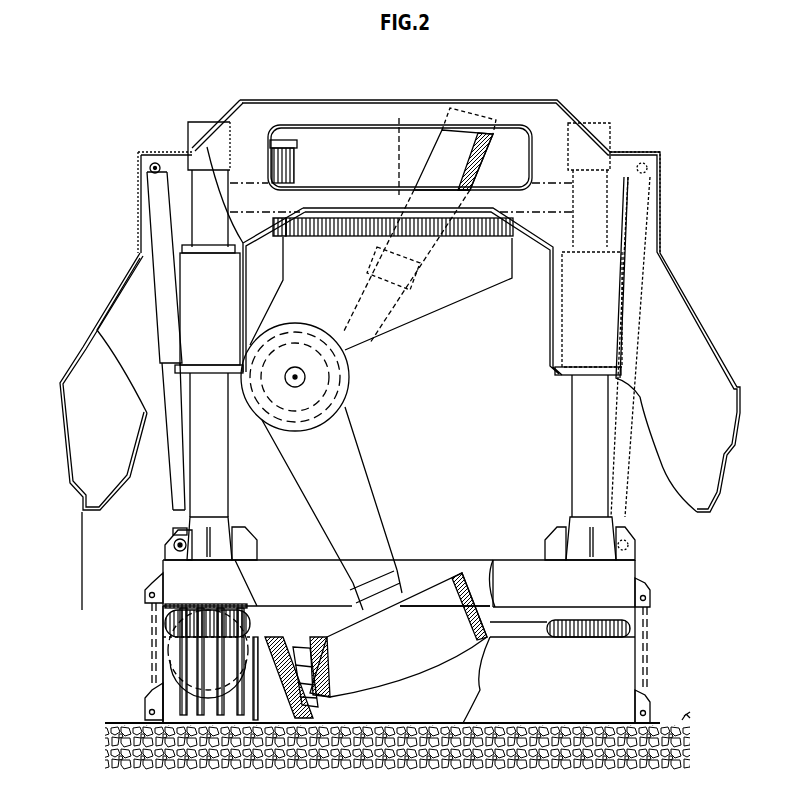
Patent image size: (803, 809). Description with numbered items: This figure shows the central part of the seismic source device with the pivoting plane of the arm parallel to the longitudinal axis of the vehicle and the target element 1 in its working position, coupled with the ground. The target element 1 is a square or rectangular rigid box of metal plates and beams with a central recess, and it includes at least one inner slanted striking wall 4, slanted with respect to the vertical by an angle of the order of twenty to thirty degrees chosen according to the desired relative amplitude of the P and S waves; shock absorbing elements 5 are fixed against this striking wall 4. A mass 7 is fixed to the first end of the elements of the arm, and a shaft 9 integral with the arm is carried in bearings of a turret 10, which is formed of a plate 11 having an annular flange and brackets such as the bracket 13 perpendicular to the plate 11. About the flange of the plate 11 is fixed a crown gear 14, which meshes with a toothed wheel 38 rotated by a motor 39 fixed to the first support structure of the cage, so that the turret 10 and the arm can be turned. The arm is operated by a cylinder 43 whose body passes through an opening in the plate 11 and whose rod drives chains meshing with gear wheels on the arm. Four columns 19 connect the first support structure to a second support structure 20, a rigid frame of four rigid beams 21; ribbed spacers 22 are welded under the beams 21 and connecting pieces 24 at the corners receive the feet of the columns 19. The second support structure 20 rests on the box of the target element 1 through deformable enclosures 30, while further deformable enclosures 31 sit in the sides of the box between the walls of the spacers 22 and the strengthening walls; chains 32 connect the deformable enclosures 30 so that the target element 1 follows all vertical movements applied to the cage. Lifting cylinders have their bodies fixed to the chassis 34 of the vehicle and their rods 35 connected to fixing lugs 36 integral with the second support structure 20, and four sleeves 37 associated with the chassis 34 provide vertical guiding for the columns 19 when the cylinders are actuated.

The target element 1 is at (607, 665).
The inner slanted striking wall 4 is at (290, 640).
The shock absorbing elements 5 is at (303, 650).
The mass 7 is at (423, 600).
The shaft 9 is at (310, 372).
The turret 10 is at (473, 363).
The plate 11 is at (493, 238).
The bracket 13 is at (420, 317).
The crown gear 14 is at (298, 237).
The columns 19 is at (215, 483).
The second support structure 20 is at (460, 552).
The rigid beams 21 is at (533, 567).
The ribbed spacers 22 is at (170, 643).
The connecting pieces 24 is at (230, 527).
The deformable enclosures 30 is at (168, 622).
The deformable enclosures 31 is at (168, 675).
The chains 32 is at (643, 655).
The chassis 34 is at (83, 347).
The rods 35 is at (177, 512).
The fixing lugs 36 is at (170, 547).
The sleeves 37 is at (190, 300).
The toothed wheel 38 is at (280, 237).
The motor 39 is at (295, 143).
The cylinder 43 is at (420, 156).